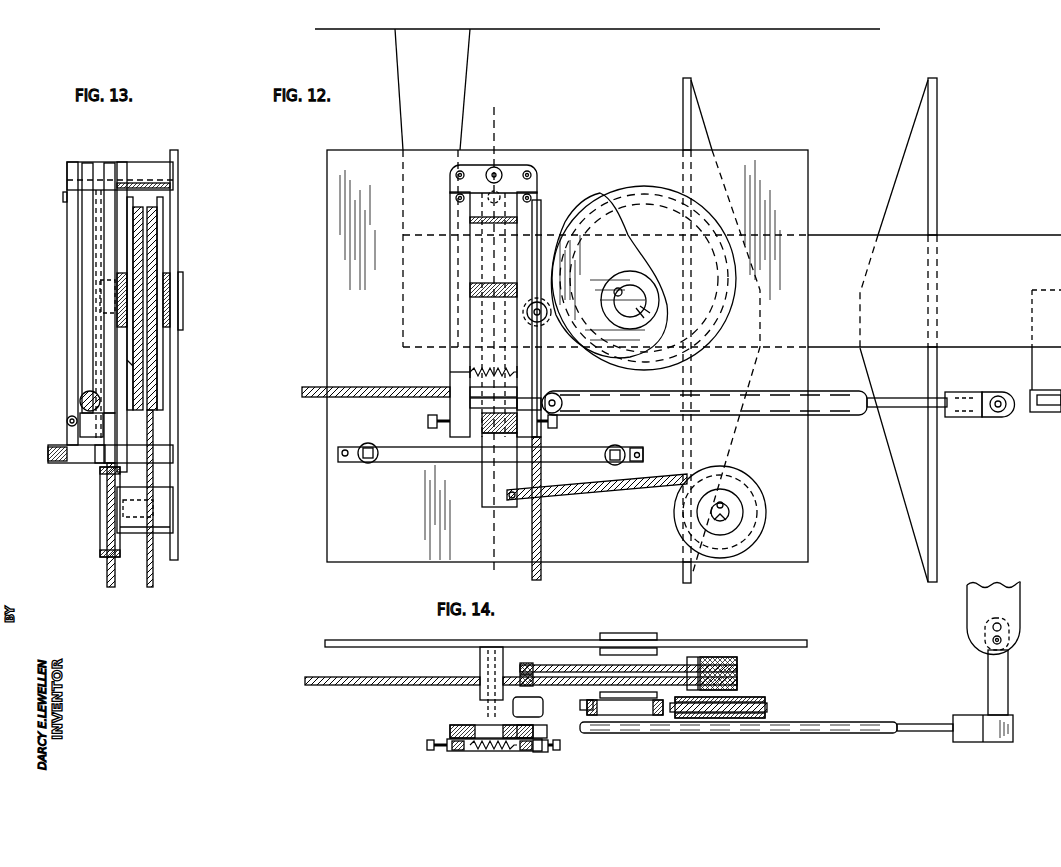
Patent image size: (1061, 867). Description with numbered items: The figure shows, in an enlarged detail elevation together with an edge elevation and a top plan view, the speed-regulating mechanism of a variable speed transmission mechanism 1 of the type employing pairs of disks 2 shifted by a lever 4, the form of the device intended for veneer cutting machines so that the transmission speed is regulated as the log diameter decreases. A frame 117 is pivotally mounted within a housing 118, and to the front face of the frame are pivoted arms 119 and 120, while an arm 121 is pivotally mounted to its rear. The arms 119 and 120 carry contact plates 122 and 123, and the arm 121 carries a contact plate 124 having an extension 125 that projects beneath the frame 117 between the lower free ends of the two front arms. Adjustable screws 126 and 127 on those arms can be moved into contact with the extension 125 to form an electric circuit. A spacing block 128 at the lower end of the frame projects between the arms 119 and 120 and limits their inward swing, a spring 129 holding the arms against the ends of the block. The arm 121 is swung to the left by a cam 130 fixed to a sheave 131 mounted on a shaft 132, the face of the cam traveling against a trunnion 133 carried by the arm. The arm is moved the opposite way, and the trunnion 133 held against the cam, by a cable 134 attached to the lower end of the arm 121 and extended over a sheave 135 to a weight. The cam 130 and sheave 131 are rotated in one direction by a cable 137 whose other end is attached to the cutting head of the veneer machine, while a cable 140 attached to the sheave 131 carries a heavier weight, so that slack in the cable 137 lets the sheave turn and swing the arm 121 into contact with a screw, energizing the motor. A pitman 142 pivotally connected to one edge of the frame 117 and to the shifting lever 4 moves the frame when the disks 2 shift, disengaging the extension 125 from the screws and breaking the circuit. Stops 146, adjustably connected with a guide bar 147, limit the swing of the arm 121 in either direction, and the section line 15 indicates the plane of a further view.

In FIG. 12, the variable speed transmission mechanism 1 is at (769, 330).
In FIG. 12, the disks 2 is at (937, 192).
In FIG. 12, the shifting lever 4 is at (1032, 417).
In FIG. 14, the shifting lever 4 is at (1010, 606).
In FIG. 12, the section line 15 is at (512, 107).
In FIG. 13, the frame 117 is at (88, 293).
In FIG. 12, the frame 117 is at (510, 166).
In FIG. 14, the frame 117 is at (470, 728).
In FIG. 13, the housing 118 is at (178, 205).
In FIG. 12, the housing 118 is at (327, 290).
In FIG. 14, the housing 118 is at (440, 640).
In FIG. 12, the arm 119 is at (458, 372).
In FIG. 14, the arm 119 is at (463, 752).
In FIG. 13, the arm 120 is at (72, 363).
In FIG. 12, the arm 120 is at (527, 428).
In FIG. 14, the arm 120 is at (527, 756).
In FIG. 13, the arm 121 is at (112, 415).
In FIG. 12, the arm 121 is at (490, 480).
In FIG. 14, the arm 121 is at (485, 703).
In FIG. 12, the contact plate 122 is at (450, 290).
In FIG. 12, the contact plate 123 is at (532, 253).
In FIG. 14, the contact plate 123 is at (518, 754).
In FIG. 12, the contact plate 124 is at (482, 193).
In FIG. 14, the contact plate 124 is at (497, 706).
In FIG. 13, the extension 125 is at (88, 430).
In FIG. 12, the extension 125 is at (483, 433).
In FIG. 12, the screw 126 is at (428, 421).
In FIG. 14, the screw 126 is at (427, 745).
In FIG. 13, the screw 127 is at (67, 421).
In FIG. 12, the screw 127 is at (557, 421).
In FIG. 14, the screw 127 is at (553, 751).
In FIG. 12, the spacing block 128 is at (487, 405).
In FIG. 14, the spacing block 128 is at (452, 753).
In FIG. 12, the spring 129 is at (487, 370).
In FIG. 14, the spring 129 is at (493, 751).
In FIG. 13, the cam 130 is at (108, 225).
In FIG. 12, the cam 130 is at (600, 205).
In FIG. 14, the cam 130 is at (640, 715).
In FIG. 13, the sheave 131 is at (157, 235).
In FIG. 12, the sheave 131 is at (717, 353).
In FIG. 14, the sheave 131 is at (740, 670).
In FIG. 12, the shaft 132 is at (645, 300).
In FIG. 12, the trunnion 133 is at (545, 308).
In FIG. 14, the trunnion 133 is at (585, 712).
In FIG. 13, the cable 134 is at (108, 575).
In FIG. 12, the cable 134 is at (628, 492).
In FIG. 14, the cable 134 is at (767, 707).
In FIG. 13, the sheave 135 is at (103, 543).
In FIG. 12, the sheave 135 is at (748, 488).
In FIG. 14, the sheave 135 is at (760, 697).
In FIG. 13, the cable 137 is at (133, 363).
In FIG. 12, the cable 137 is at (318, 397).
In FIG. 14, the cable 137 is at (406, 685).
In FIG. 13, the cable 140 is at (153, 572).
In FIG. 12, the cable 140 is at (541, 545).
In FIG. 14, the cable 140 is at (573, 665).
In FIG. 13, the pitman 142 is at (80, 399).
In FIG. 12, the pitman 142 is at (858, 415).
In FIG. 14, the pitman 142 is at (768, 733).
In FIG. 13, the stops 146 is at (83, 470).
In FIG. 12, the stops 146 is at (368, 464).
In FIG. 13, the guide bar 147 is at (93, 470).
In FIG. 12, the guide bar 147 is at (420, 463).